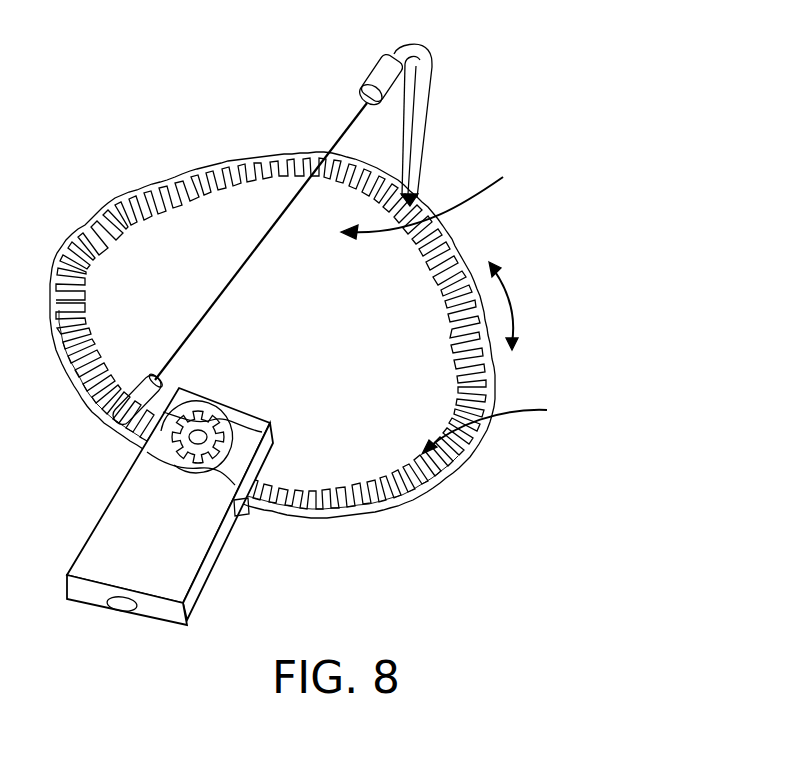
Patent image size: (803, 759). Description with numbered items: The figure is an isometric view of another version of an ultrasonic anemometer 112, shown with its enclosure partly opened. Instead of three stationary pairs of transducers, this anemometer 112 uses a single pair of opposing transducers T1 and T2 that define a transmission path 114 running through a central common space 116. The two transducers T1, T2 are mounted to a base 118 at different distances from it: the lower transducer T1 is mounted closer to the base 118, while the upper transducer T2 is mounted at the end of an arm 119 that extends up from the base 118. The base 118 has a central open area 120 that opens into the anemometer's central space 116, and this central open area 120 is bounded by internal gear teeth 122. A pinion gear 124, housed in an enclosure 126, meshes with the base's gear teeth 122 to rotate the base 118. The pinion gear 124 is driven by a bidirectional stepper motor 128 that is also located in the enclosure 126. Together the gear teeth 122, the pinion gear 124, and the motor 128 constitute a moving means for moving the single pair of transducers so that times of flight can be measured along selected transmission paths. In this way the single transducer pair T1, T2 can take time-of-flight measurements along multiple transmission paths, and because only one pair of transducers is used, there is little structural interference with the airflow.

The ultrasonic anemometer 112 is at (129, 70).
The transmission path 114 is at (262, 247).
The central common space 116 is at (438, 250).
The base 118 is at (397, 505).
The arm 119 is at (430, 112).
The central open area 120 is at (503, 427).
The internal gear teeth 122 is at (117, 233).
The pinion gear 124 is at (212, 428).
The enclosure 126 is at (210, 577).
The bidirectional stepper motor 128 is at (184, 412).
The lower transducer T1 is at (146, 376).
The upper transducer T2 is at (362, 95).